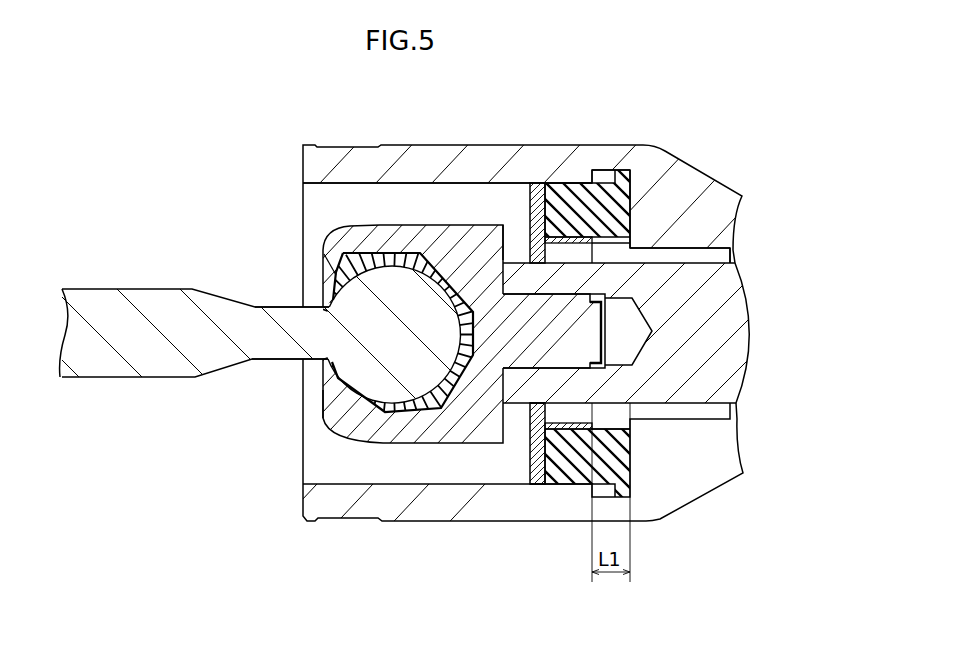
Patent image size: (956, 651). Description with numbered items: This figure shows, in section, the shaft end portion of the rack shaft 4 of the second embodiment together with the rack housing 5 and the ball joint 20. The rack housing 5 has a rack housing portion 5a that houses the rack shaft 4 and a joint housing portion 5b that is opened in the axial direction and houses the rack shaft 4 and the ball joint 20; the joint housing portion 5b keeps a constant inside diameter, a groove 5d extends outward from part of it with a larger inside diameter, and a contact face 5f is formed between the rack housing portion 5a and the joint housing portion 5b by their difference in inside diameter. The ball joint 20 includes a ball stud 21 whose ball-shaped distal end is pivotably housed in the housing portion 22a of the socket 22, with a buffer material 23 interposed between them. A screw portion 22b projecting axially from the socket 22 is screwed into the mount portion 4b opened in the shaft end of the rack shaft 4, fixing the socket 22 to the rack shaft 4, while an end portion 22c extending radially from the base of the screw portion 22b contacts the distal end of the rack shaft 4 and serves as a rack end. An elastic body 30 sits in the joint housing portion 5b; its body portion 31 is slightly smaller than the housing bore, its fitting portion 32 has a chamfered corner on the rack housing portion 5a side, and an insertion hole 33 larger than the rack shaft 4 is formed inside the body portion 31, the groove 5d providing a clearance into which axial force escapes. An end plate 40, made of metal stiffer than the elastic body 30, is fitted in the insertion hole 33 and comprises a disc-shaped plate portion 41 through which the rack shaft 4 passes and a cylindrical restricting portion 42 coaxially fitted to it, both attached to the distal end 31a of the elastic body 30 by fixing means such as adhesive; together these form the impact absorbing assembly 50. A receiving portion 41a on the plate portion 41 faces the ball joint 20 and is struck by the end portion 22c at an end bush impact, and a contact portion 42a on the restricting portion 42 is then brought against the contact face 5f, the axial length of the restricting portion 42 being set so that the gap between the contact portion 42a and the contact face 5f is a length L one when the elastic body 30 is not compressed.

The rack shaft 4 is at (746, 300).
The mount portion 4b is at (633, 300).
The rack housing 5 is at (447, 147).
The rack housing portion 5a is at (734, 254).
The joint housing portion 5b is at (347, 185).
The groove 5d is at (632, 170).
The contact face 5f is at (650, 248).
The ball joint 20 is at (322, 245).
The ball stud 21 is at (272, 306).
The socket 22 is at (438, 325).
The housing portion 22a is at (387, 272).
The screw portion 22b is at (533, 360).
The end portion 22c is at (502, 227).
The buffer material 23 is at (337, 389).
The elastic body 30 is at (595, 164).
The body portion 31 is at (532, 198).
The distal end 31a is at (543, 207).
The fitting portion 32 is at (618, 212).
The insertion hole 33 is at (614, 244).
The end plate 40 is at (529, 492).
The plate portion 41 is at (533, 470).
The receiving portion 41a is at (533, 470).
The restricting portion 42 is at (552, 455).
The contact portion 42a is at (631, 432).
The assembly 50 is at (645, 177).